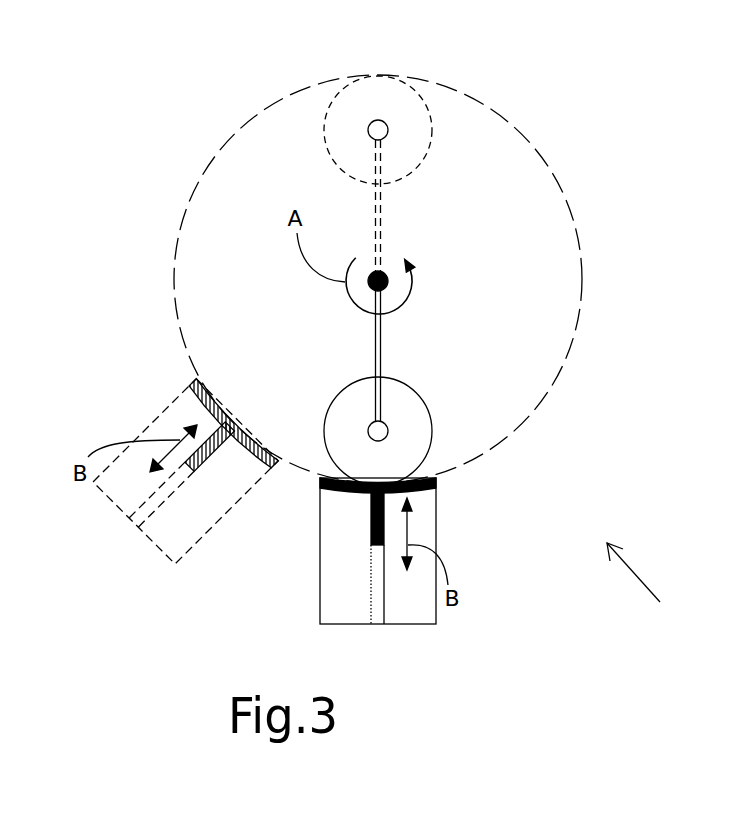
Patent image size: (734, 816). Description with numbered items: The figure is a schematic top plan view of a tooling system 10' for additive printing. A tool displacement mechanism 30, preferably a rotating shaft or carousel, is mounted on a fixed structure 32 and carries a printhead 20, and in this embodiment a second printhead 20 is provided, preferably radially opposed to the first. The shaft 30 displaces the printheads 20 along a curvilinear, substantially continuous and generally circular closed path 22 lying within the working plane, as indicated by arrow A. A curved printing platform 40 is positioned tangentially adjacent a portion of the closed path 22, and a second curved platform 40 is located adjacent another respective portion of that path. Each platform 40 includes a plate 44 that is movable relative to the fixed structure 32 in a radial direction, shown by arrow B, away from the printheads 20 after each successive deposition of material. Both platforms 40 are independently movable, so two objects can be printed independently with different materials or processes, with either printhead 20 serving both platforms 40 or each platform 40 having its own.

The tooling system 10' is at (654, 586).
The printhead 20 is at (432, 135).
The closed path 22 is at (193, 195).
The tool displacement mechanism 30 is at (383, 272).
The fixed structure 32 is at (320, 512).
The printing platform 40 is at (360, 482).
The plate 44 is at (340, 487).